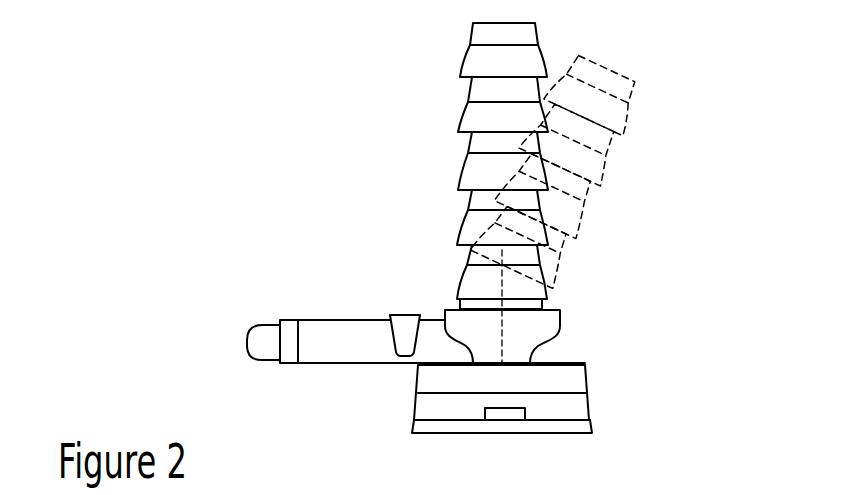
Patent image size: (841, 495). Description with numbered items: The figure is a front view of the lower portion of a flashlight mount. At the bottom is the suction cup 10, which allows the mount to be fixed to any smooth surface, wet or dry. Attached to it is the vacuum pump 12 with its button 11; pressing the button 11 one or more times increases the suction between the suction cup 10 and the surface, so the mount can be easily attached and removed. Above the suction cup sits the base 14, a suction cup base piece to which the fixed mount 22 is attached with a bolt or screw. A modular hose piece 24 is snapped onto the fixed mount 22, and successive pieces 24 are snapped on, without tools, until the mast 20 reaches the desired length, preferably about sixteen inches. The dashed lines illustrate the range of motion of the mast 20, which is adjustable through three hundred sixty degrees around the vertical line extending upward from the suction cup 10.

The suction cup 10 is at (552, 398).
The button 11 is at (272, 338).
The vacuum pump 12 is at (368, 360).
The base 14 is at (527, 347).
The mast 20 is at (450, 73).
The fixed mount 22 is at (548, 309).
The modular hose piece 24 is at (470, 277).